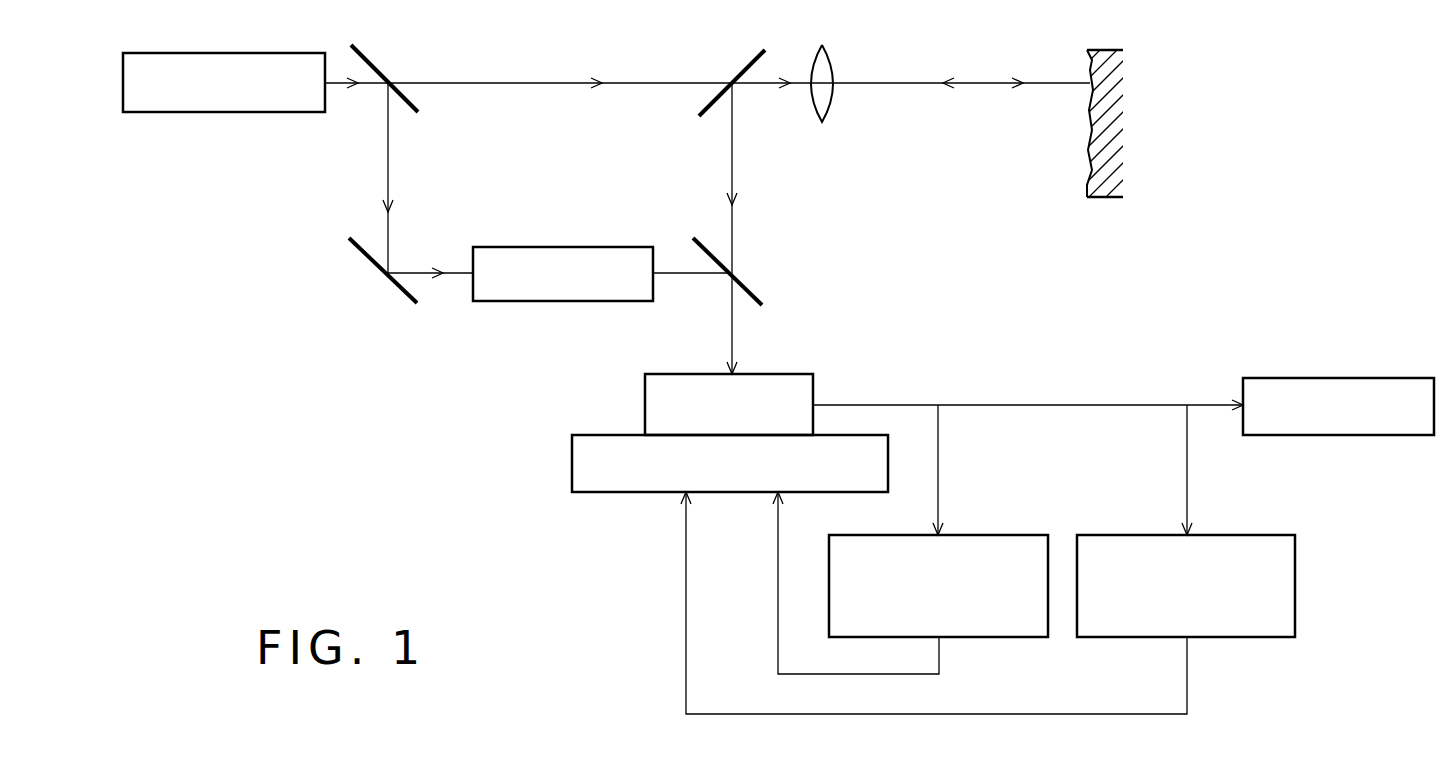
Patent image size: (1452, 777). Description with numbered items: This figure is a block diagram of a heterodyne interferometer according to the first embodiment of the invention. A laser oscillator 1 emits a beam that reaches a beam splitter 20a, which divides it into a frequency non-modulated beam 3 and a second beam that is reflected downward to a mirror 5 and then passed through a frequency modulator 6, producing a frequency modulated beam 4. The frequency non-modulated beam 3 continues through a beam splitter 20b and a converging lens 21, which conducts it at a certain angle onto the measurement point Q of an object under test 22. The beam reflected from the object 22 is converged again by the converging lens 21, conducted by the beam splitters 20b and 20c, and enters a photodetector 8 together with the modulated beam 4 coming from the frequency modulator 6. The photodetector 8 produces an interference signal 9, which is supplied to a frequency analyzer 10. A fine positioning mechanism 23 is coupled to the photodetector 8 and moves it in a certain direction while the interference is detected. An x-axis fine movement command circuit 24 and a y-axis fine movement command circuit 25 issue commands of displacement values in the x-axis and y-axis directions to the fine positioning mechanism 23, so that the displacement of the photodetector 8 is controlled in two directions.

The laser oscillator 1 is at (262, 53).
The frequency non-modulated beam 3 is at (533, 83).
The frequency modulated beam 4 is at (390, 165).
The mirror 5 is at (363, 257).
The frequency modulator 6 is at (590, 247).
The photodetector 8 is at (790, 374).
The interference signal 9 is at (1048, 405).
The frequency analyzer 10 is at (1351, 378).
The beam splitter 20a is at (378, 60).
The beam splitter 20b is at (752, 62).
The beam splitter 20c is at (750, 288).
The converging lens 21 is at (836, 60).
The object under test 22 is at (1088, 152).
The fine positioning mechanism 23 is at (572, 462).
The x-axis fine movement command circuit 24 is at (1015, 535).
The y-axis fine movement command circuit 25 is at (1237, 535).
The measurement point Q is at (1086, 81).